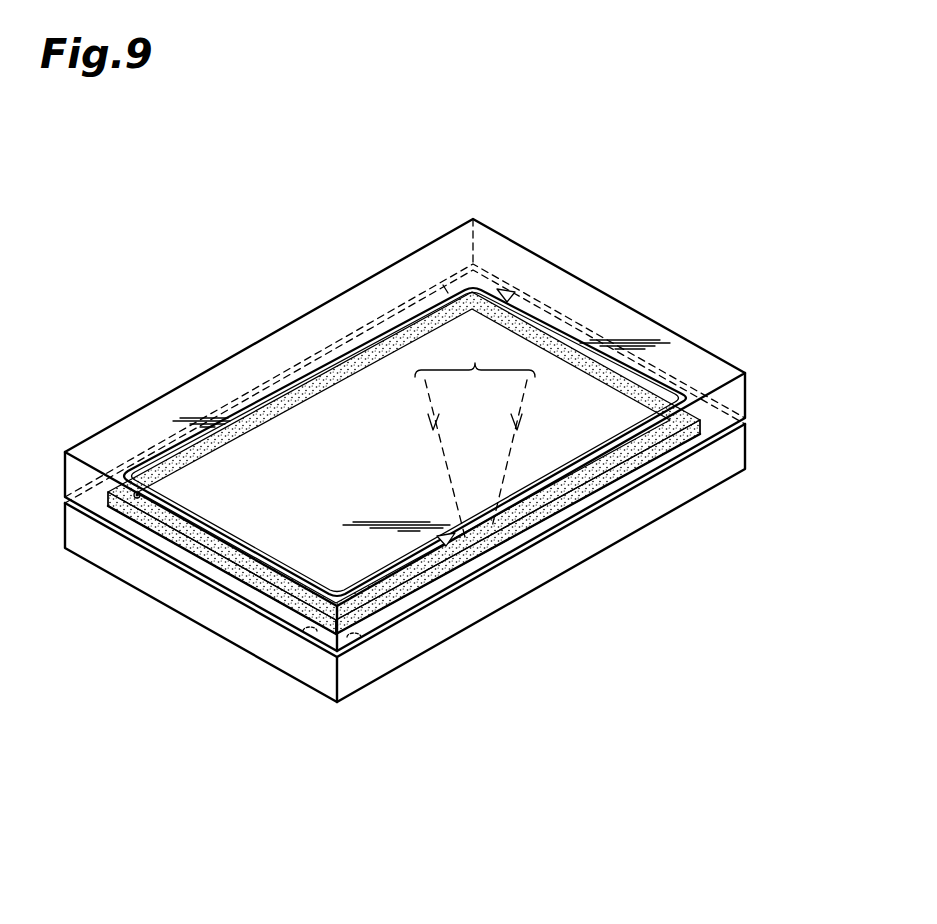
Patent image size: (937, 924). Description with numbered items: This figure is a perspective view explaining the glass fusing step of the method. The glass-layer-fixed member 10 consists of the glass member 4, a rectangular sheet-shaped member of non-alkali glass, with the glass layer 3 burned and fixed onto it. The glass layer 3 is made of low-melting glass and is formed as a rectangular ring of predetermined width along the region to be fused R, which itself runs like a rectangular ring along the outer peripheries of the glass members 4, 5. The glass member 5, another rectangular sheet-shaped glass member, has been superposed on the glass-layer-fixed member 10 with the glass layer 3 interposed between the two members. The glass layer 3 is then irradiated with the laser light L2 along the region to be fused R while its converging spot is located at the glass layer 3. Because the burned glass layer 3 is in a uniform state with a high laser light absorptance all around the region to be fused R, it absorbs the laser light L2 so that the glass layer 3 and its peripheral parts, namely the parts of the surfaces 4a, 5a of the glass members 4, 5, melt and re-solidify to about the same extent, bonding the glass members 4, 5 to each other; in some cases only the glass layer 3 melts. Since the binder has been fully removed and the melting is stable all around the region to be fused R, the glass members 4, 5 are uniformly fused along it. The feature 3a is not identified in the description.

The glass-layer-fixed member 10 is at (262, 711).
The glass member (second glass member) 5 is at (745, 390).
The surface of glass member 5 5a is at (310, 623).
The glass member (first glass member) 4 is at (745, 447).
The surface of glass member 4 4a is at (365, 633).
The glass layer 3 is at (197, 562).
The outer edge portion of sealing frame 3a is at (173, 450).
The region to be fused R is at (578, 500).
The laser light (second laser light) L2 is at (475, 430).